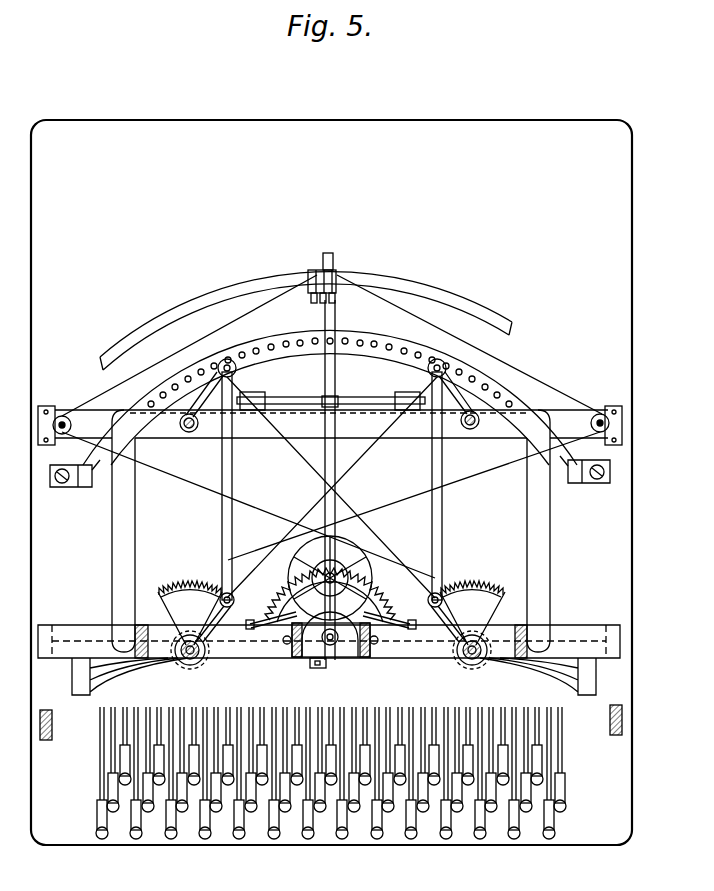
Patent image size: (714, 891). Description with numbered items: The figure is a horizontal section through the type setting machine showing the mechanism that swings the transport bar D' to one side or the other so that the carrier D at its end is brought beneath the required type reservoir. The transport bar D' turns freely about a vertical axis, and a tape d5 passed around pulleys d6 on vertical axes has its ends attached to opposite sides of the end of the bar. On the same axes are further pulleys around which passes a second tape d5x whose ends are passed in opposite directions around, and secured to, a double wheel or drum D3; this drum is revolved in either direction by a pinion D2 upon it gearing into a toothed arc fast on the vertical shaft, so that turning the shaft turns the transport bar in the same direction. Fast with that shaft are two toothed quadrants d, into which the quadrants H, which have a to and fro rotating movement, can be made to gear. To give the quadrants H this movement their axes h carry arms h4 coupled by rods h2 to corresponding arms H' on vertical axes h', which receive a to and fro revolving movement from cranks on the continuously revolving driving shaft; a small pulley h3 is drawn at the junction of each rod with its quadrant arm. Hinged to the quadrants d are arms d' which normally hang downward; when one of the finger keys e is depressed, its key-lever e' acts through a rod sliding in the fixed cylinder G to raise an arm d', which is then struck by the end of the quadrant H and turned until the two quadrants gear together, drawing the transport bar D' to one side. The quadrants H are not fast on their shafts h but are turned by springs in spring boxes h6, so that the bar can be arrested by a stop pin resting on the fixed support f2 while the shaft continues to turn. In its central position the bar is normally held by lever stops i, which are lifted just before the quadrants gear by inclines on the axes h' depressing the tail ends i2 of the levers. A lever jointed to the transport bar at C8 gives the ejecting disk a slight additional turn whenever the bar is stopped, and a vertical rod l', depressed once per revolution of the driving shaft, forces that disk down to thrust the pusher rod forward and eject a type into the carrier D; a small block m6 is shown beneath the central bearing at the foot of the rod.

The carrier D is at (329, 273).
The transport bar D' is at (341, 480).
The perforated segmental plate E is at (340, 345).
The fixed support f2 is at (490, 392).
The tape d5 is at (240, 328).
The pulleys d6 is at (62, 414).
The lever stops i is at (288, 397).
The tail ends of the lever stops i2 is at (255, 411).
The vertical axis h' is at (317, 414).
The arm H' is at (325, 479).
The joint C8 is at (337, 505).
The tape d5x is at (186, 488).
The rods h2 is at (440, 490).
The toothed quadrants H is at (331, 601).
The toothed quadrants d is at (329, 611).
The small pulleys h3 is at (432, 594).
The double wheel or drum D3 is at (300, 556).
The pinion D2 is at (328, 573).
The arms h4 is at (212, 630).
The arms d' is at (332, 632).
The fixed cylinder G is at (326, 645).
The stop block m6 is at (313, 670).
The vertical rod l' is at (335, 657).
The axes h is at (334, 665).
The spring boxes h6 is at (462, 668).
The key-levers e' is at (325, 773).
The finger keys e is at (341, 771).